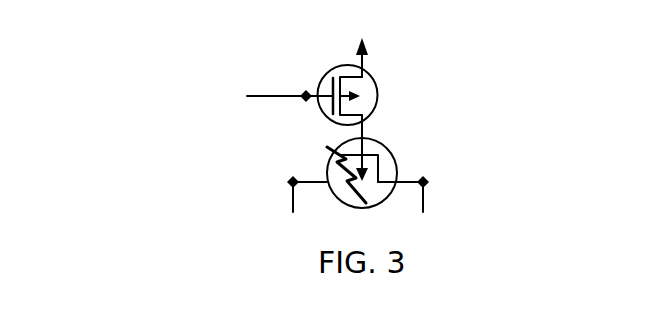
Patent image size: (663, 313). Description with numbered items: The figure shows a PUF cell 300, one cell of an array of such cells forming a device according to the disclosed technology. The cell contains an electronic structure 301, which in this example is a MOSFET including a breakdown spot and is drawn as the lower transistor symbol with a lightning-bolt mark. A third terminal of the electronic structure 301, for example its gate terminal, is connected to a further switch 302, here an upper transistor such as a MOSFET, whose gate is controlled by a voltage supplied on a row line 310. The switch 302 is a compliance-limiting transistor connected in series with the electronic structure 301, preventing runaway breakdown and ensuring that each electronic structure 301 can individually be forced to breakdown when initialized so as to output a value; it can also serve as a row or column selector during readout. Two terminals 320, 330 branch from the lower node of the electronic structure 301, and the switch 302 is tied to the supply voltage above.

The PUF cell 300 is at (158, 83).
The electronic structure 301 is at (378, 152).
The switch 302 is at (325, 77).
The row line 310 is at (264, 120).
The first output terminal 320 is at (280, 199).
The second output terminal 330 is at (438, 190).